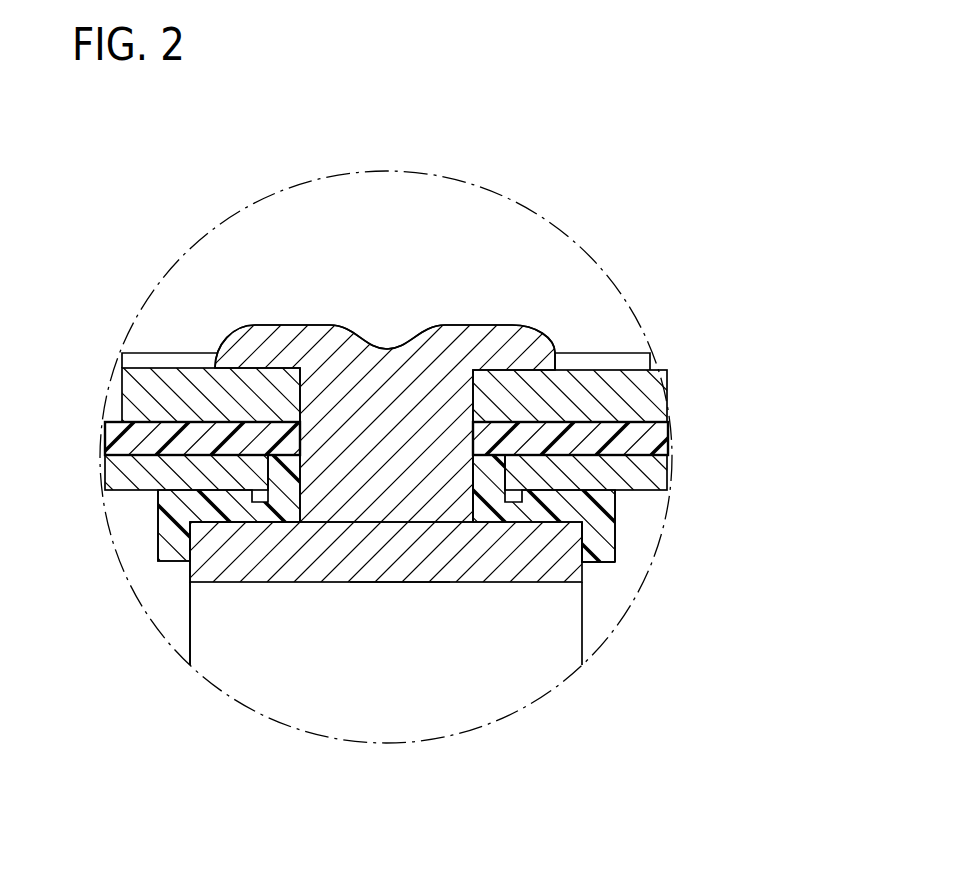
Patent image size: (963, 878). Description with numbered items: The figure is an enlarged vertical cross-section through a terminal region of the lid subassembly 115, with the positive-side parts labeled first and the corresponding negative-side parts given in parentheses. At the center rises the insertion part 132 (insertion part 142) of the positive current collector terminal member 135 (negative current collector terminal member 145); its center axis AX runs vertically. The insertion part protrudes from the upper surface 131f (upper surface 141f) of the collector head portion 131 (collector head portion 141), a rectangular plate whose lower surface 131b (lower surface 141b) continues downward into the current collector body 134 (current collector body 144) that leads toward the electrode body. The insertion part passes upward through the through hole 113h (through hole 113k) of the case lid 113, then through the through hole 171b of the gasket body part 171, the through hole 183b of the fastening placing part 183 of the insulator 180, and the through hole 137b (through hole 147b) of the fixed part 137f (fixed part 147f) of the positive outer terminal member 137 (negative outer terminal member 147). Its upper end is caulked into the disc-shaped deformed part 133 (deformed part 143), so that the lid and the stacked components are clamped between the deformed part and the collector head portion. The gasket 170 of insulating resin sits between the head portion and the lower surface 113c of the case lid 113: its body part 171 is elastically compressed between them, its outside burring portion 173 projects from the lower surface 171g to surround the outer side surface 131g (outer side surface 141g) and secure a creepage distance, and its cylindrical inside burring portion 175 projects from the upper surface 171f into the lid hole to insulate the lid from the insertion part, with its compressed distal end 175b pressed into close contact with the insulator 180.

The lid subassembly 115 is at (478, 293).
The positive current collector terminal member 135 is at (244, 301).
The negative current collector terminal member 145 is at (265, 338).
The insertion part 132 is at (306, 316).
The insertion part 142 is at (357, 398).
The through hole 137b is at (394, 315).
The through hole 147b is at (457, 397).
The deformed part 133 is at (499, 283).
The deformed part 143 is at (502, 333).
The positive outer terminal member 137 is at (595, 302).
The negative outer terminal member 147 is at (582, 360).
The fixed part 137f is at (124, 352).
The fixed part 147f is at (130, 390).
The insulator 180 is at (580, 382).
The fastening placing part 183 is at (120, 425).
The through hole 183b is at (386, 490).
The case lid 113 is at (627, 468).
The through hole 113h is at (437, 461).
The through hole 113k is at (475, 475).
The lower surface 113c is at (553, 492).
The inside burring portion 175 is at (284, 462).
The distal end 175b is at (288, 433).
The body part 171 is at (250, 513).
The through hole 171b is at (312, 535).
The upper surface 171f is at (545, 432).
The lower surface 171g is at (606, 530).
The outside burring portion 173 is at (165, 546).
The gasket 170 is at (603, 527).
The collector head portion 131 is at (419, 607).
The collector head portion 141 is at (573, 573).
The lower surface 131b is at (413, 625).
The lower surface 141b is at (395, 584).
The upper surface 131f is at (678, 514).
The upper surface 141f is at (615, 500).
The outer side surface 131g is at (116, 582).
The outer side surface 141g is at (190, 550).
The current collector body 134 is at (168, 693).
The current collector body 144 is at (190, 620).